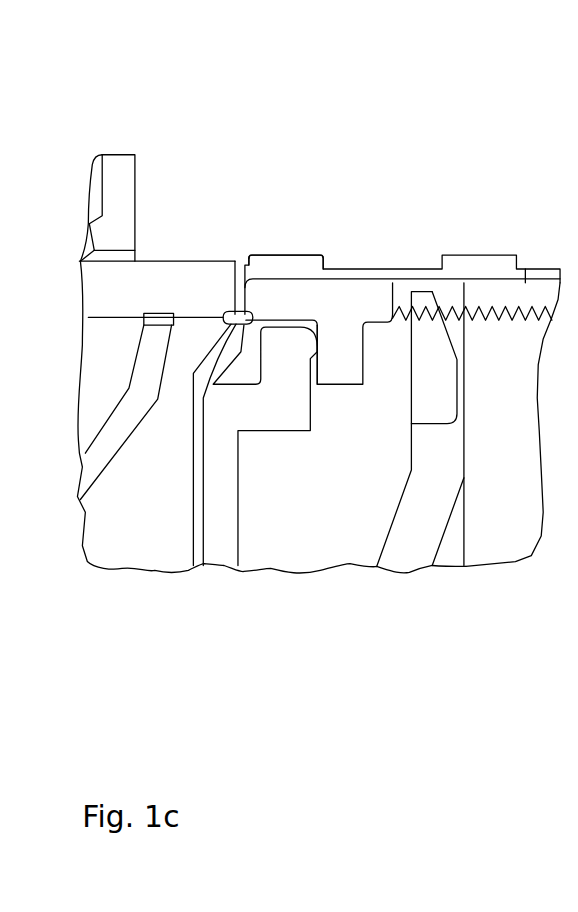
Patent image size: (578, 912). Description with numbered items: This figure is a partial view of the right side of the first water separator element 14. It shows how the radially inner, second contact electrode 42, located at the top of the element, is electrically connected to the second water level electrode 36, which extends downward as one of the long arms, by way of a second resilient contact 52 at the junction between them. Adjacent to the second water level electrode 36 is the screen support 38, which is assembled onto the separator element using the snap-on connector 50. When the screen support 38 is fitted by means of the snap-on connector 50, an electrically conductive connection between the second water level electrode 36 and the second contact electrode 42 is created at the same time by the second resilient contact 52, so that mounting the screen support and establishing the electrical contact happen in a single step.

The first water separator element 14 is at (456, 127).
The second water level electrode 36 is at (193, 530).
The screen support 38 is at (221, 542).
The second contact electrode 42 is at (277, 262).
The snap-on connector 50 is at (323, 358).
The second resilient contact 52 is at (220, 308).